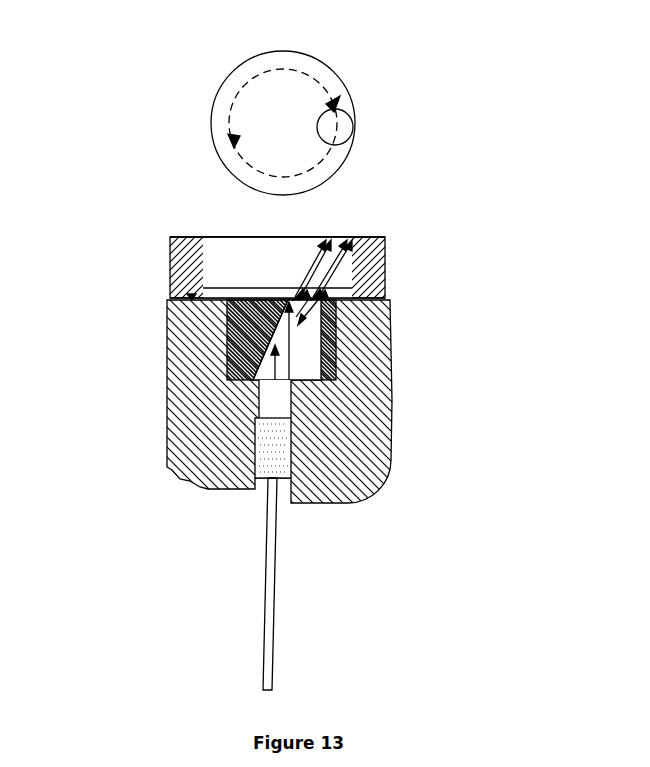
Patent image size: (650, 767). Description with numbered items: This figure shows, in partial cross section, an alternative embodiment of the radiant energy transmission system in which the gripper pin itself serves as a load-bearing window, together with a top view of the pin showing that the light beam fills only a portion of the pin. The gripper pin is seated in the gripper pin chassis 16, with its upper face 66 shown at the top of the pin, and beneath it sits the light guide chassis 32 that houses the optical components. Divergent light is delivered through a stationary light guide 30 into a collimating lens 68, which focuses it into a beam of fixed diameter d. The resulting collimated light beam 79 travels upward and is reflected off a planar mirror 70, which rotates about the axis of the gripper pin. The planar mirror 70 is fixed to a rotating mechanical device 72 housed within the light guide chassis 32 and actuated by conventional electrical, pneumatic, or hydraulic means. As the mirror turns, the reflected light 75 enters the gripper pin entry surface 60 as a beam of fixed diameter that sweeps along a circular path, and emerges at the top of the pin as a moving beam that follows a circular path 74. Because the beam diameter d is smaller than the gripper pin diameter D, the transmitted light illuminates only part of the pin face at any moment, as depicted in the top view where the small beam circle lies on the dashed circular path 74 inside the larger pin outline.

The gripper pin chassis 16 is at (388, 320).
The light guide 30 is at (267, 540).
The light guide chassis 32 is at (391, 436).
The gripper pin entry surface 60 is at (293, 298).
The top surface of ring 66 is at (242, 235).
The collimating lens 68 is at (255, 433).
The planar mirror 70 is at (228, 335).
The rotating mechanical device 72 is at (172, 289).
The circular path 74 is at (253, 82).
The light entering the gripper pin entry surface 75 is at (322, 322).
The collimated light beam 79 is at (259, 390).
The gripper pin diameter D is at (222, 85).
The light beam diameter d is at (317, 132).